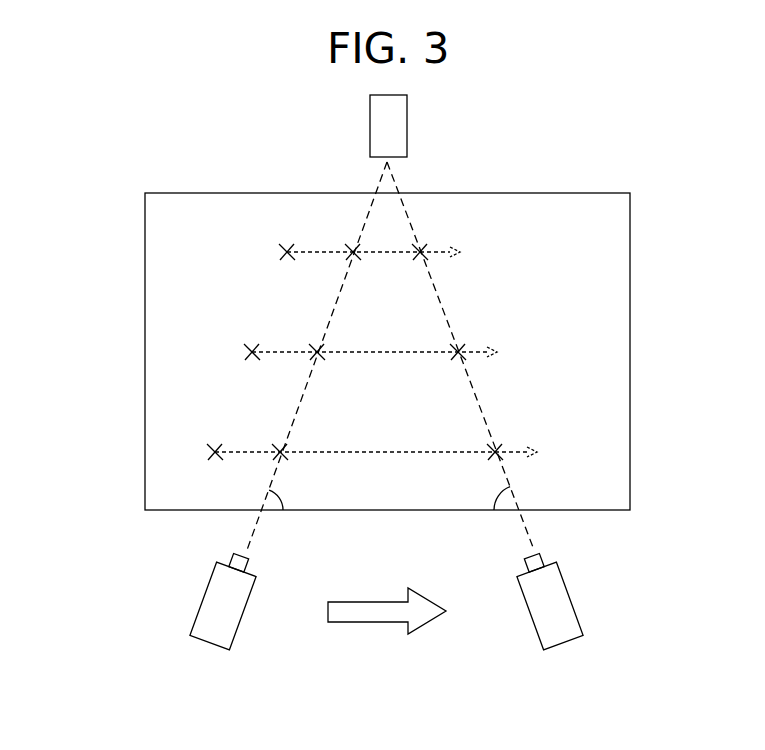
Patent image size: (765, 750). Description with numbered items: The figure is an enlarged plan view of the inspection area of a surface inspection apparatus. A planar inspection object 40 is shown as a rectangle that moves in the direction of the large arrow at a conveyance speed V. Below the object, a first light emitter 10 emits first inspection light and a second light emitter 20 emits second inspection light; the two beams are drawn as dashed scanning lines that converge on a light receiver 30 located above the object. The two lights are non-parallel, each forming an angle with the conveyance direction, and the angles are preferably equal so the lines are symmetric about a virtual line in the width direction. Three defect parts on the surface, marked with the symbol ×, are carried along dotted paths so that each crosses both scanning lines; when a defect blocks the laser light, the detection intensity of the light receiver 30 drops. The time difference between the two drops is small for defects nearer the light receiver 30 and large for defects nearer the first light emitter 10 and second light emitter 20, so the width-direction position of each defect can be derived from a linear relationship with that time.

The first light emitter 10 is at (211, 636).
The second light emitter 20 is at (563, 634).
The light receiver 30 is at (398, 121).
The inspection object 40 is at (530, 193).